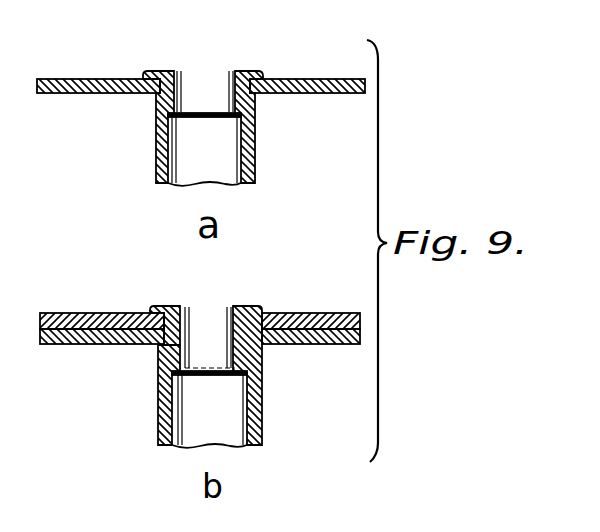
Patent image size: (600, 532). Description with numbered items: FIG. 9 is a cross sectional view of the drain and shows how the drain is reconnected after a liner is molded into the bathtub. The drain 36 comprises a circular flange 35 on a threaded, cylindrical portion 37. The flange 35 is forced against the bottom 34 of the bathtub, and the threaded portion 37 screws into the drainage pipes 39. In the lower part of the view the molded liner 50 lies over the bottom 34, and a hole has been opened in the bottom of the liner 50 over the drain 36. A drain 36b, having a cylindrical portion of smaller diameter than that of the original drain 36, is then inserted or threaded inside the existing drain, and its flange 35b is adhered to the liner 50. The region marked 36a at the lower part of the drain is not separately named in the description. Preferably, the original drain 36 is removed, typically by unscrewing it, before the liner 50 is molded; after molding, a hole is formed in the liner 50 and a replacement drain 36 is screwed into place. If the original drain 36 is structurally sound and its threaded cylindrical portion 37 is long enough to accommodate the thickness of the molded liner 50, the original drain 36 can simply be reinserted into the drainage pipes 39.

The bottom 34 is at (62, 79).
The circular flange 35 is at (265, 94).
The flange 35b is at (248, 304).
The drain 36 is at (208, 226).
The crimped portion of bushing 36a is at (160, 366).
The drain 36b is at (160, 306).
The threaded cylindrical portion 37 is at (156, 112).
The drainage pipes 39 is at (257, 169).
The liner 50 is at (49, 313).